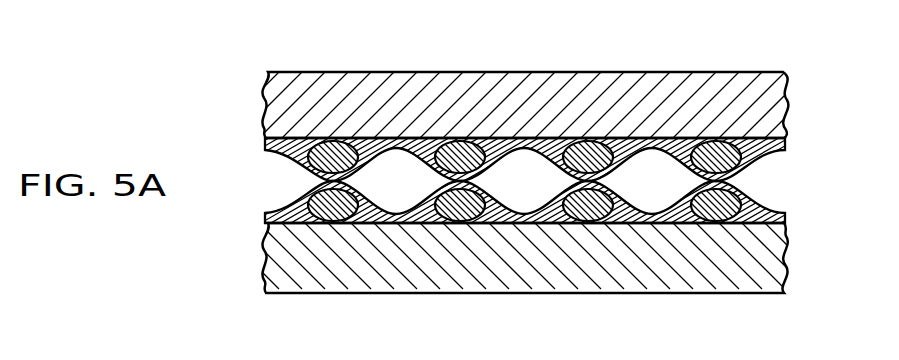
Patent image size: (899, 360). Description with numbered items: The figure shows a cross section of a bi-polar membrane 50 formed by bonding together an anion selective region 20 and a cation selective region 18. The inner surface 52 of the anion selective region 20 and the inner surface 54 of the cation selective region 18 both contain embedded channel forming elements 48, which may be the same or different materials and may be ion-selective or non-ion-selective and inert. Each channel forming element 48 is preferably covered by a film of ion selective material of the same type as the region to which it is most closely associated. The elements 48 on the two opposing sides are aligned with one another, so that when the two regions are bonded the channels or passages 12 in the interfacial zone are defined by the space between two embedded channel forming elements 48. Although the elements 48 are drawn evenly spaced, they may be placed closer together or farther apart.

The bi-polar membrane 50 is at (243, 61).
The anion selective region 20 is at (512, 72).
The cation selective region 18 is at (783, 243).
The inner surface of the anion selective region 52 is at (748, 172).
The inner surface of the cation selective region 54 is at (752, 202).
The channel forming elements 48 is at (710, 148).
The channels or passages 12 is at (522, 187).